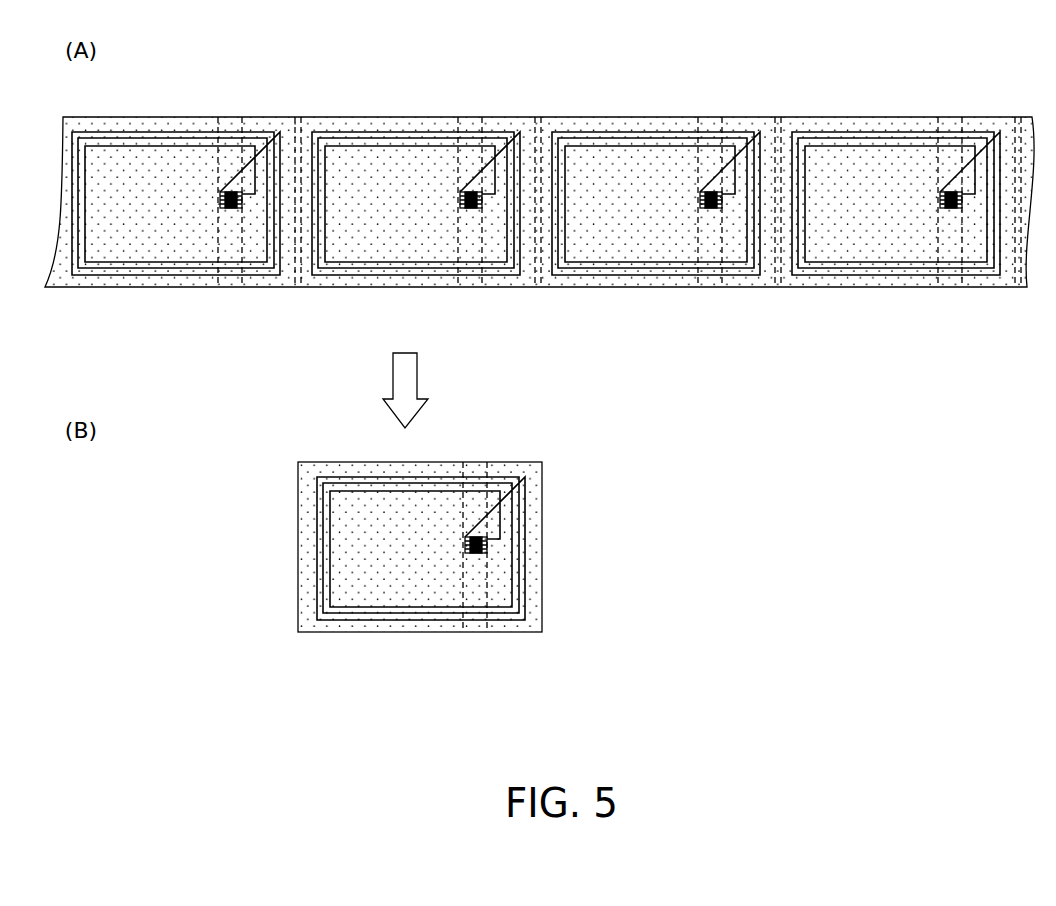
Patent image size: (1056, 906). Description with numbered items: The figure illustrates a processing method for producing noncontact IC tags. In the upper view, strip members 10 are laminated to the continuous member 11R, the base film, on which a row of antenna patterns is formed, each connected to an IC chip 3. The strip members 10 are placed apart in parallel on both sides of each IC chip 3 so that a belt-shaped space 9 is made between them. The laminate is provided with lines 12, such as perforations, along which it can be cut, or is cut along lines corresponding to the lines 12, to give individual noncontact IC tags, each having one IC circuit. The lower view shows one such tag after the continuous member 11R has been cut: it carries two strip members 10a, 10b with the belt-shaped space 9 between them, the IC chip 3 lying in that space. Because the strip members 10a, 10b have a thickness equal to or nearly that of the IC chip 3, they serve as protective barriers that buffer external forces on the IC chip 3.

The continuous member 11R is at (455, 88).
The strip members 10 is at (539, 235).
The belt-shaped space 9 is at (590, 408).
The lines 12 is at (1019, 287).
The IC chip 3 is at (591, 395).
The strip member 10b is at (420, 580).
The strip member 10a is at (420, 580).